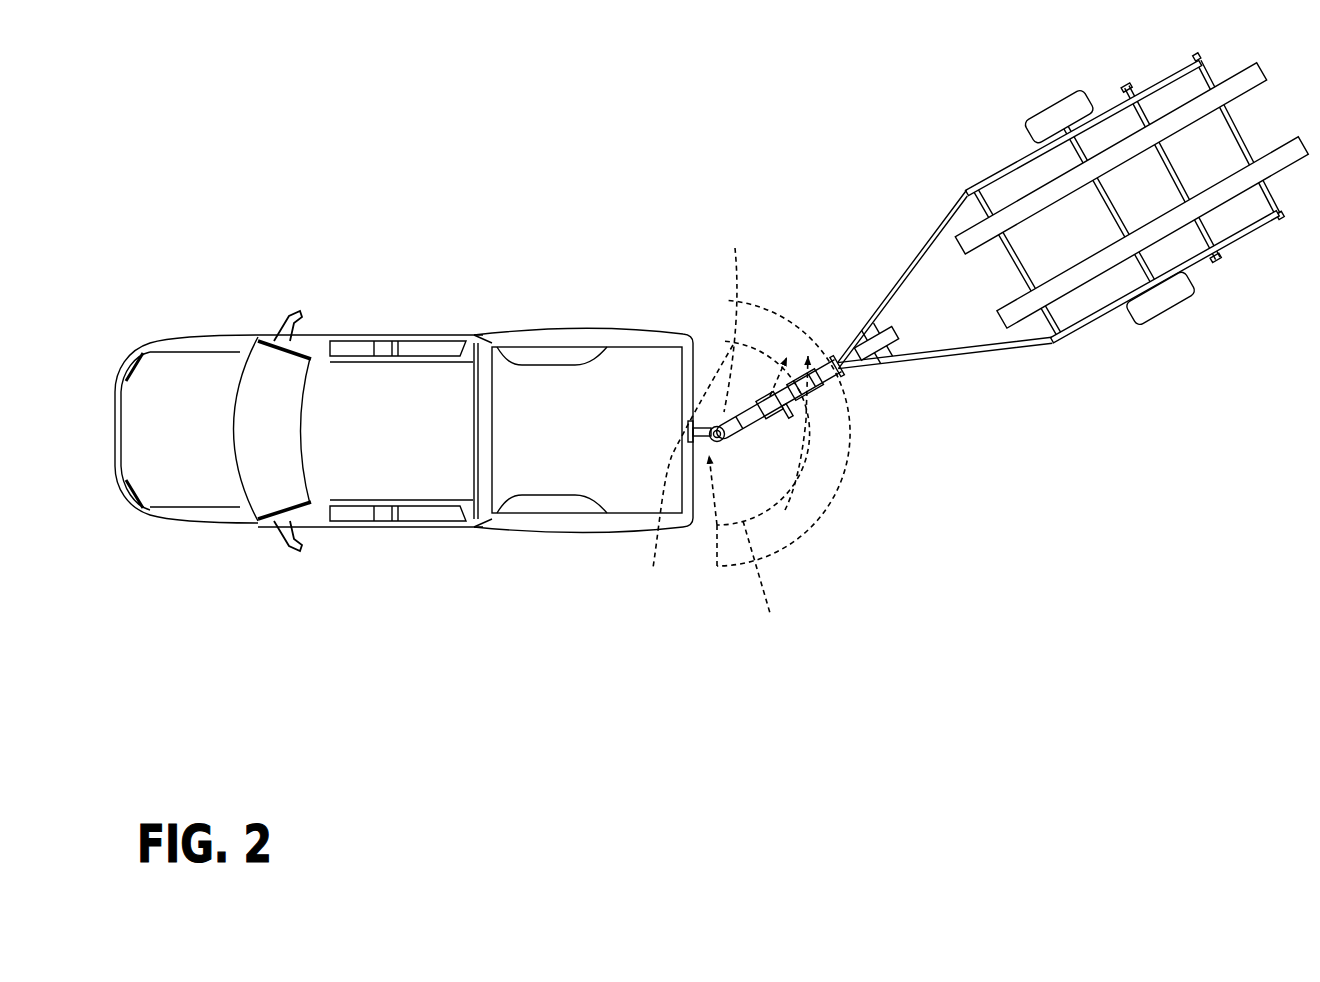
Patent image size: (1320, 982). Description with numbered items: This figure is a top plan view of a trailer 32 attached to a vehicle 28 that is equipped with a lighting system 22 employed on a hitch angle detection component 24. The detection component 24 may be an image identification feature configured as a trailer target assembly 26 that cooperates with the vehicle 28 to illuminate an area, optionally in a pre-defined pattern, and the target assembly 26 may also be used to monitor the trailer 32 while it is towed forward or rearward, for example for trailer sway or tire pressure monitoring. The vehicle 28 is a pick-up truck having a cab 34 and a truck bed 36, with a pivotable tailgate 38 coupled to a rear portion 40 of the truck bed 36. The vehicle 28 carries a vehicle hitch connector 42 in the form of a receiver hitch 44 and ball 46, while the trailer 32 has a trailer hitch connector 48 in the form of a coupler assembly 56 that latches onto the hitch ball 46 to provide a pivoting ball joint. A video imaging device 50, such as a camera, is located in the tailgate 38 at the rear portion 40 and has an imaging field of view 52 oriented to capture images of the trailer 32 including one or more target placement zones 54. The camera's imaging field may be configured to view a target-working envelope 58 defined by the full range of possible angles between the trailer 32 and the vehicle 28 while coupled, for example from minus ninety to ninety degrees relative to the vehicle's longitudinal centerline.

The lighting system 22 is at (814, 405).
The hitch angle detection component 24 is at (819, 420).
The trailer target assembly 26 is at (810, 401).
The vehicle 28 is at (222, 323).
The trailer 32 is at (966, 181).
The cab 34 is at (416, 501).
The truck bed 36 is at (571, 393).
The pivotable tailgate 38 is at (689, 370).
The rear portion 40 is at (758, 462).
The vehicle hitch connector 42 is at (736, 449).
The receiver hitch 44 is at (712, 414).
The ball 46 is at (723, 416).
The trailer hitch connector 48 is at (805, 407).
The video imaging device 50 is at (682, 470).
The imaging field of view 52 is at (757, 596).
The target placement zone 54 is at (827, 346).
The coupler assembly 56 is at (727, 407).
The target-working envelope 58 is at (736, 313).